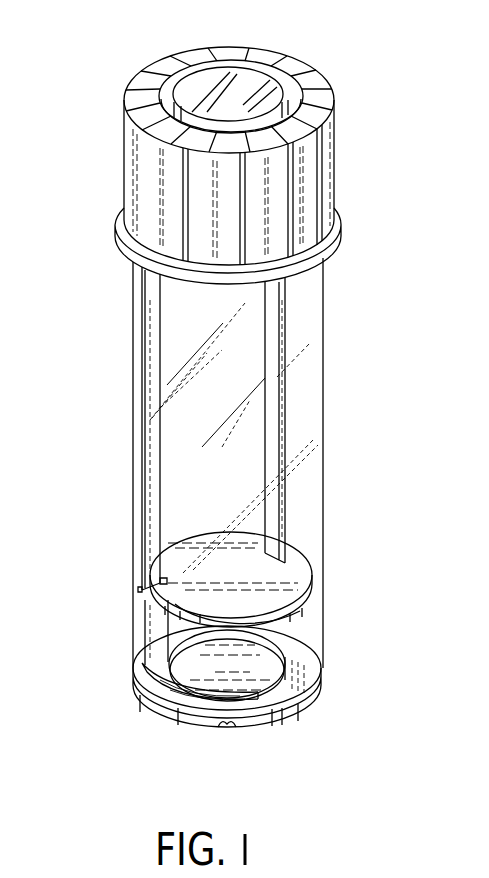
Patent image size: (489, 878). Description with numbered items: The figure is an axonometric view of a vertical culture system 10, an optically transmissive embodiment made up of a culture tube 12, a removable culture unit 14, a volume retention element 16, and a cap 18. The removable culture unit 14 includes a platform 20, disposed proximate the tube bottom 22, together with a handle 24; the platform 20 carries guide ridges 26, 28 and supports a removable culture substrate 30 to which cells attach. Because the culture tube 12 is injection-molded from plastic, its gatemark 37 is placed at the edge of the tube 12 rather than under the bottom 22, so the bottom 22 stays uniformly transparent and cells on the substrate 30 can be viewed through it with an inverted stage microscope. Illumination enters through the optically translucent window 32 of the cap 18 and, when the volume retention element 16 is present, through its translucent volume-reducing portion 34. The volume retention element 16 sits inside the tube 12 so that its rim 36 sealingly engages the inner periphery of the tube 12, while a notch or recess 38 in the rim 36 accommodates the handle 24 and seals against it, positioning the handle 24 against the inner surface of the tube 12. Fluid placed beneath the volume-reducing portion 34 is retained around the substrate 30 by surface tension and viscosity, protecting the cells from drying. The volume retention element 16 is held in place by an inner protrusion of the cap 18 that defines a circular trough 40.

The vertical culture system 10 is at (461, 38).
The culture tube 12 is at (133, 395).
The removable culture unit 14 is at (285, 626).
The volume retention element 16 is at (295, 509).
The cap 18 is at (112, 190).
The platform 20 is at (292, 700).
The tube bottom 22 is at (305, 700).
The handle 24 is at (150, 516).
The guide ridge 26 is at (312, 610).
The guide ridge 28 is at (155, 693).
The removable culture substrate 30 is at (267, 670).
The optically translucent window 32 is at (247, 80).
The translucent volume-reducing portion 34 is at (216, 565).
The rim 36 is at (207, 623).
The gatemark 37 is at (227, 728).
The notch or recess 38 is at (142, 590).
The trough 40 is at (286, 106).